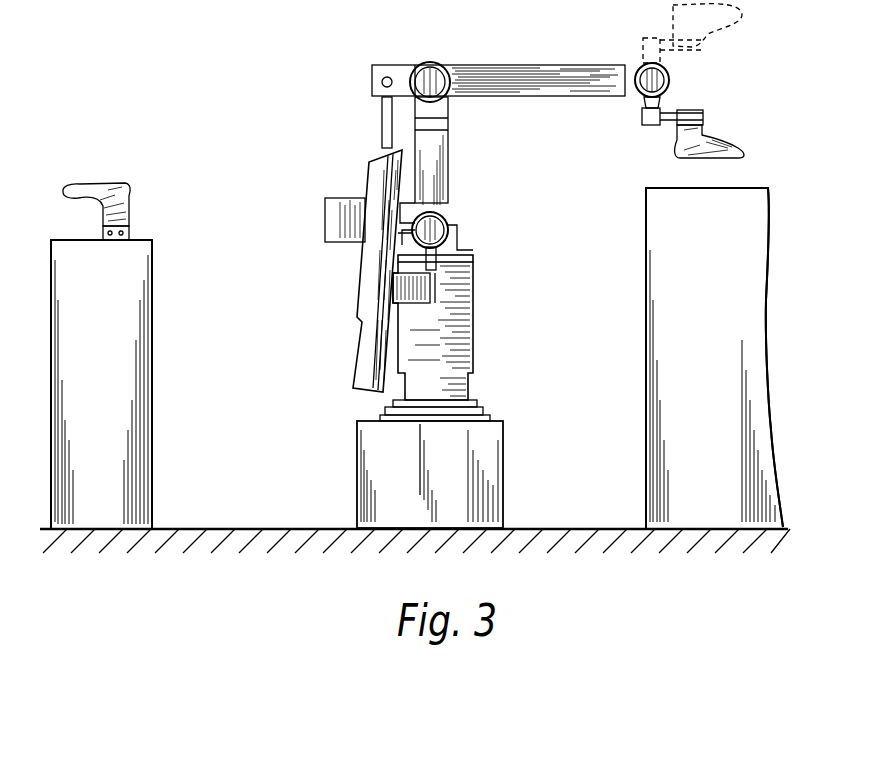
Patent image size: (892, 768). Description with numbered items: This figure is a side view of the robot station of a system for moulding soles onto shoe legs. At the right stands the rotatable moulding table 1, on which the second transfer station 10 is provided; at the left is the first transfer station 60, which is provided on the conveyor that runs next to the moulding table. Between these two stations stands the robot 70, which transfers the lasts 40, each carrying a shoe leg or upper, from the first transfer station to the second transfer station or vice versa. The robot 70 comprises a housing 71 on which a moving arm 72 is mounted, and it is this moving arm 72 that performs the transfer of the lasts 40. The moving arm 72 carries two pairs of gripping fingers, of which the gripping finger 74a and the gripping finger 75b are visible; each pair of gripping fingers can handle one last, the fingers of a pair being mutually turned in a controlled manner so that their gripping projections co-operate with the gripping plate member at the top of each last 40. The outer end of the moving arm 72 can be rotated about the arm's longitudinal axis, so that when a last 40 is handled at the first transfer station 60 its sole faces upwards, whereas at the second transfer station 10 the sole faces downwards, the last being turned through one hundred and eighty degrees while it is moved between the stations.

The rotatable moulding table 1 is at (770, 237).
The second transfer station 10 is at (743, 188).
The last 40 is at (130, 186).
The first transfer station 60 is at (148, 242).
The robot 70 is at (473, 282).
The housing 71 is at (367, 480).
The moving arm 72 is at (548, 73).
The gripping finger 74a is at (698, 45).
The gripping finger 75b is at (703, 122).